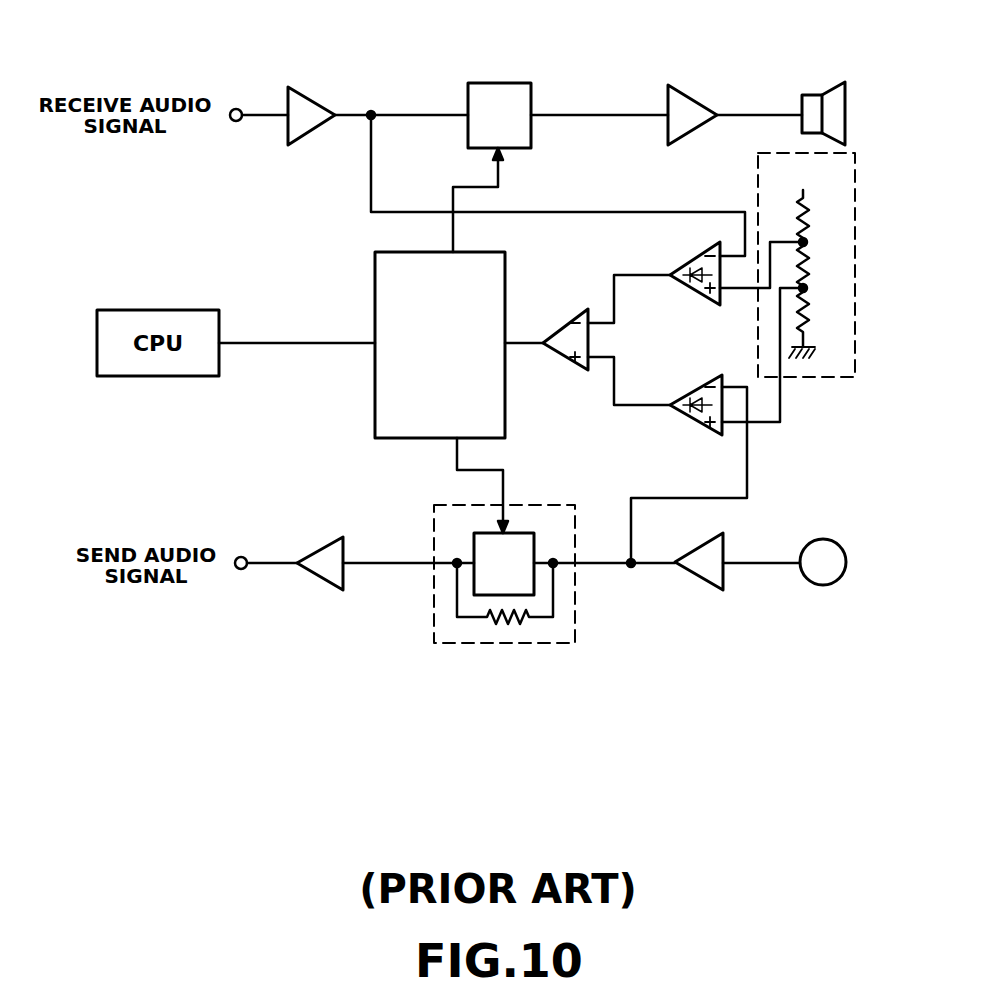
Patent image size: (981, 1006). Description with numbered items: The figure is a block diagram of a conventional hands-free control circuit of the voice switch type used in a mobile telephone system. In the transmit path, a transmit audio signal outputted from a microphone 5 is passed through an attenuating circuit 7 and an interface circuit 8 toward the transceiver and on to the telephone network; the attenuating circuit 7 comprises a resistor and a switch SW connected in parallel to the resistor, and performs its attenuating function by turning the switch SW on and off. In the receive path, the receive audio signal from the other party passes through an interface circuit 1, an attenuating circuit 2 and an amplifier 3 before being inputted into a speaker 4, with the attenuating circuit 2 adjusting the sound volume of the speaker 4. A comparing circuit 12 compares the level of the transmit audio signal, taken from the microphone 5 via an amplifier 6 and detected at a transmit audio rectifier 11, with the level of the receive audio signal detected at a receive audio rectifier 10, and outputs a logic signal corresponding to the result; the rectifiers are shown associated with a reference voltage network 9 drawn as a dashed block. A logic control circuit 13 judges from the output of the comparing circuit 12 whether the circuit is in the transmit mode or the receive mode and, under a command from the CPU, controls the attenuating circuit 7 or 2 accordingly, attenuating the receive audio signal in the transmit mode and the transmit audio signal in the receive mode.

The interface circuit 1 is at (300, 90).
The attenuating circuit 2 is at (498, 83).
The amplifier 3 is at (675, 85).
The speaker 4 is at (832, 82).
The microphone 5 is at (820, 586).
The amplifier 6 is at (705, 585).
The attenuating circuit 7 is at (516, 645).
The interface circuit 8 is at (330, 590).
The reference voltage circuit 9 is at (855, 242).
The receive audio rectifier 10 is at (680, 258).
The transmit audio rectifier 11 is at (702, 428).
The comparing circuit 12 is at (571, 360).
The logic control circuit 13 is at (505, 285).